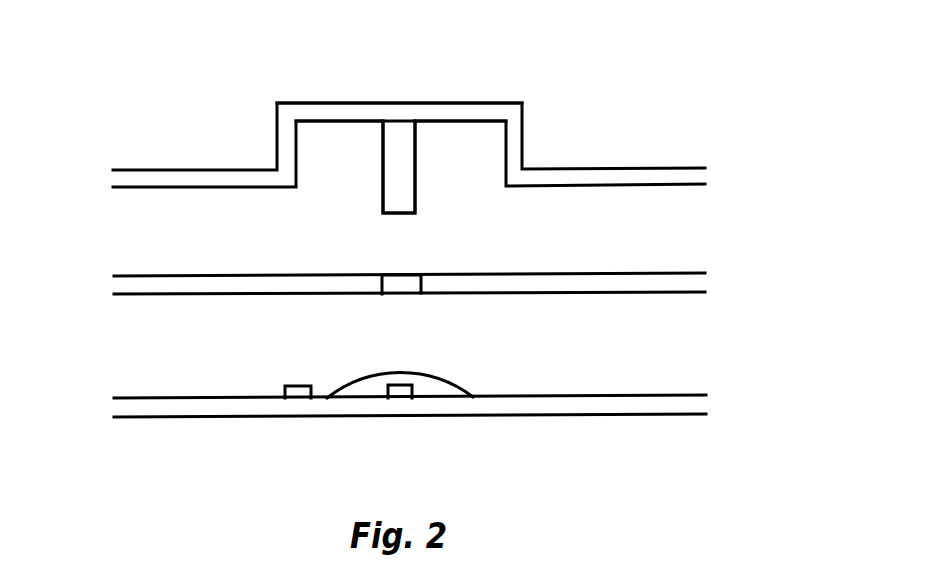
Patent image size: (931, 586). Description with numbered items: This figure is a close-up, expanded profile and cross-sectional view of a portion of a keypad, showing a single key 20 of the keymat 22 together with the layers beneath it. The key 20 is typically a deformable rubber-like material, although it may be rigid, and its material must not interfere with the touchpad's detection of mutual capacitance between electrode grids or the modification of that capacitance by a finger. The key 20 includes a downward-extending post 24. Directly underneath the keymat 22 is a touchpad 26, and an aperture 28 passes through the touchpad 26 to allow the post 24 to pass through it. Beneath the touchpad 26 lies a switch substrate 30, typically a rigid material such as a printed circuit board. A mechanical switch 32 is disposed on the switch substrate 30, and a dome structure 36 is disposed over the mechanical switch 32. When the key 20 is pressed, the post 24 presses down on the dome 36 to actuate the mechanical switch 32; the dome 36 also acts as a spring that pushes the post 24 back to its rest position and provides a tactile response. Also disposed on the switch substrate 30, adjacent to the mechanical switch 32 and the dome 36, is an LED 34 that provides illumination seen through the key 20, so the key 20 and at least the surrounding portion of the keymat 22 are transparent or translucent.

The key 20 is at (487, 102).
The keymat 22 is at (697, 174).
The post 24 is at (403, 182).
The touchpad 26 is at (695, 283).
The aperture 28 is at (405, 282).
The switch substrate 30 is at (691, 403).
The mechanical switch 32 is at (405, 396).
The LED 34 is at (283, 385).
The dome structure 36 is at (438, 378).